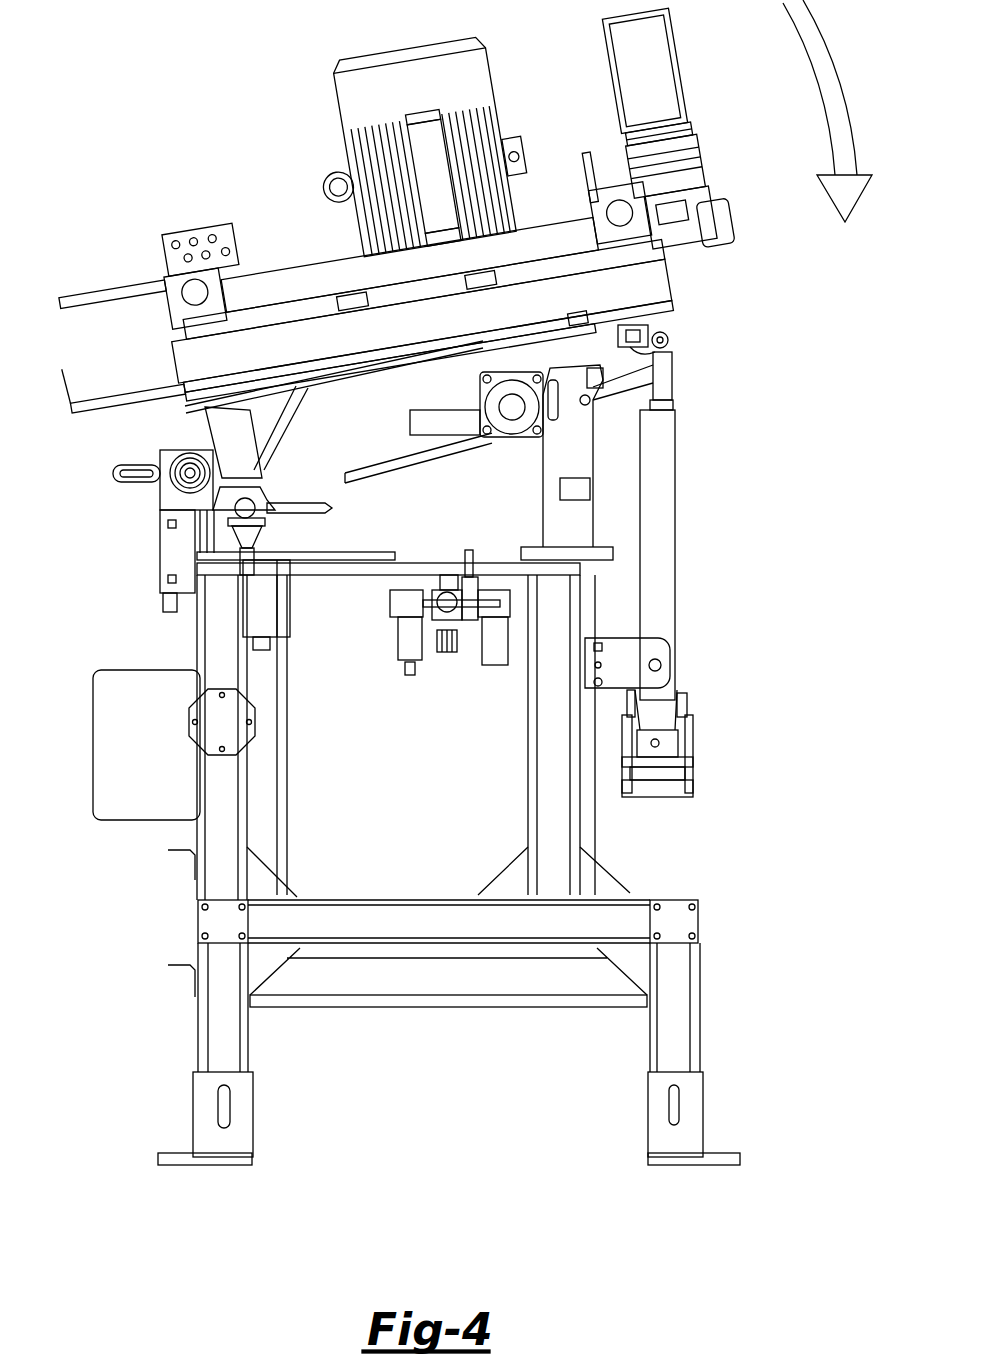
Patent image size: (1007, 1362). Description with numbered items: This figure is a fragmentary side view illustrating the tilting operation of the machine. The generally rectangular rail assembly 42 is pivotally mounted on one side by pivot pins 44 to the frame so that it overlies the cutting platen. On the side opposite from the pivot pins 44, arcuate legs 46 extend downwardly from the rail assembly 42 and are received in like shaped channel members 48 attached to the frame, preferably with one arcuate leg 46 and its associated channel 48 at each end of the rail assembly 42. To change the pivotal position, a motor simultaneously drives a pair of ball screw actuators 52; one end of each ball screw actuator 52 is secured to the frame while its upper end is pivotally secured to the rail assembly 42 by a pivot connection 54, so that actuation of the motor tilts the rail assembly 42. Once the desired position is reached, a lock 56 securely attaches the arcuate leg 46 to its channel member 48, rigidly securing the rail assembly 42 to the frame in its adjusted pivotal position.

The rail assembly 42 is at (193, 372).
The pivot pins 44 is at (245, 510).
The arcuate legs 46 is at (548, 372).
The channel members 48 is at (570, 460).
The ball screw actuators 52 is at (655, 505).
The pivot connection 54 is at (661, 340).
The lock 56 is at (512, 407).